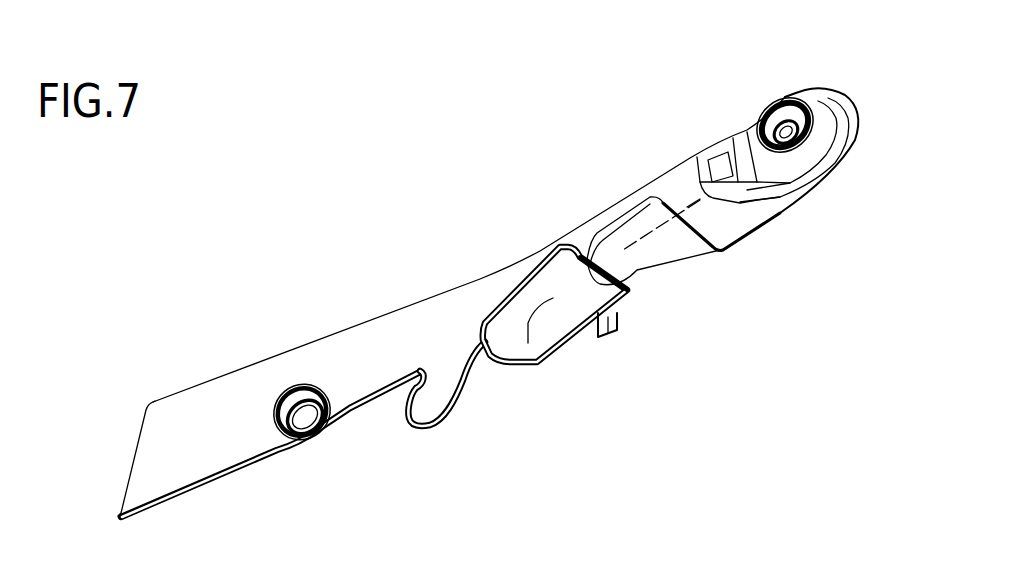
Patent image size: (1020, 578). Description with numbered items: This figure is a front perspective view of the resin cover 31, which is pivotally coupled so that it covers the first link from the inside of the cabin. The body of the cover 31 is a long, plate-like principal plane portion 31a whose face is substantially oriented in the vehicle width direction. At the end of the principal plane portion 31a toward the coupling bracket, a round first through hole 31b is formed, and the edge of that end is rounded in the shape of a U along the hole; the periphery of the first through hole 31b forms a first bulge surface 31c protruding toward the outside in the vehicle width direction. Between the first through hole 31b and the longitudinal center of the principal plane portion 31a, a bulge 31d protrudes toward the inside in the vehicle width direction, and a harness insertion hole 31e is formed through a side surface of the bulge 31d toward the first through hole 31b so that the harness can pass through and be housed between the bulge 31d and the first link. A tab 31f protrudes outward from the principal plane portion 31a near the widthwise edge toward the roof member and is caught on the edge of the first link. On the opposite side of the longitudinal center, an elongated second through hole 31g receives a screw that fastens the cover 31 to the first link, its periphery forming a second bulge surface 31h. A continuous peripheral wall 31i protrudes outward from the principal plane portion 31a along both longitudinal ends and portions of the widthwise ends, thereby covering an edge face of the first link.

The cover 31 is at (600, 160).
The principal plane portion 31a is at (380, 363).
The first through hole 31b is at (815, 120).
The first bulge surface 31c is at (777, 100).
The bulge 31d is at (510, 272).
The harness insertion hole 31e is at (727, 150).
The tab 31f is at (598, 340).
The second through hole 31g is at (298, 447).
The second bulge surface 31h is at (300, 383).
The peripheral wall 31i is at (820, 190).